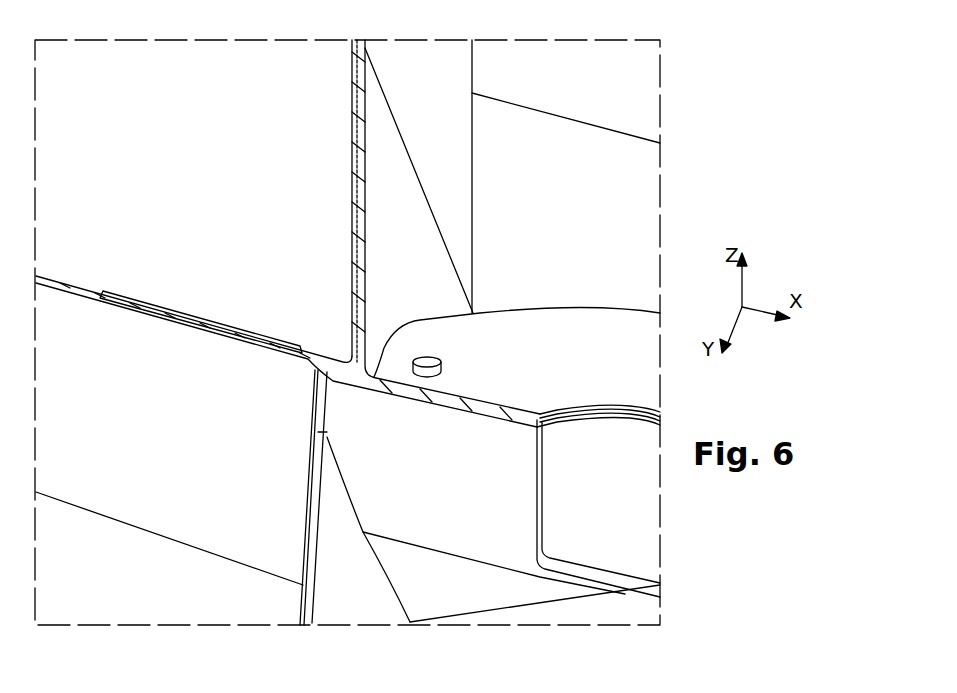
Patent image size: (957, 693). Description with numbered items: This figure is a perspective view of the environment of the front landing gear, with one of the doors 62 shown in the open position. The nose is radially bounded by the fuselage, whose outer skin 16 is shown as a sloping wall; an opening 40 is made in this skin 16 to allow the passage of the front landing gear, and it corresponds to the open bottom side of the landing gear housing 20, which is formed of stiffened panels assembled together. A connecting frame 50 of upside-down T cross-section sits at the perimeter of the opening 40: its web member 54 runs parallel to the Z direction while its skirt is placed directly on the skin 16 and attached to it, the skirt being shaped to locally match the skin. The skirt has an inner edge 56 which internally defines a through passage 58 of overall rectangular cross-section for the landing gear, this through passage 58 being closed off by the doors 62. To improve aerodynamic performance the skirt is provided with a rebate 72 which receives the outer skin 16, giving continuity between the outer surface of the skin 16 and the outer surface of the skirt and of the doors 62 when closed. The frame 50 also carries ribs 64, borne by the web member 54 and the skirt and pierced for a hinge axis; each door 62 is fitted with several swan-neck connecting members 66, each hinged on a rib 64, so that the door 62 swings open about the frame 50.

The outer skin 16 is at (60, 280).
The landing gear housing 20 is at (345, 103).
The opening 40 is at (324, 401).
The connecting frame 50 is at (142, 283).
The web member 54 is at (360, 183).
The inner edge 56 is at (540, 497).
The through passage 58 is at (618, 520).
The door 62 is at (341, 588).
The rib 64 is at (402, 242).
The swan-neck connecting member 66 is at (547, 348).
The rebate 72 is at (300, 378).